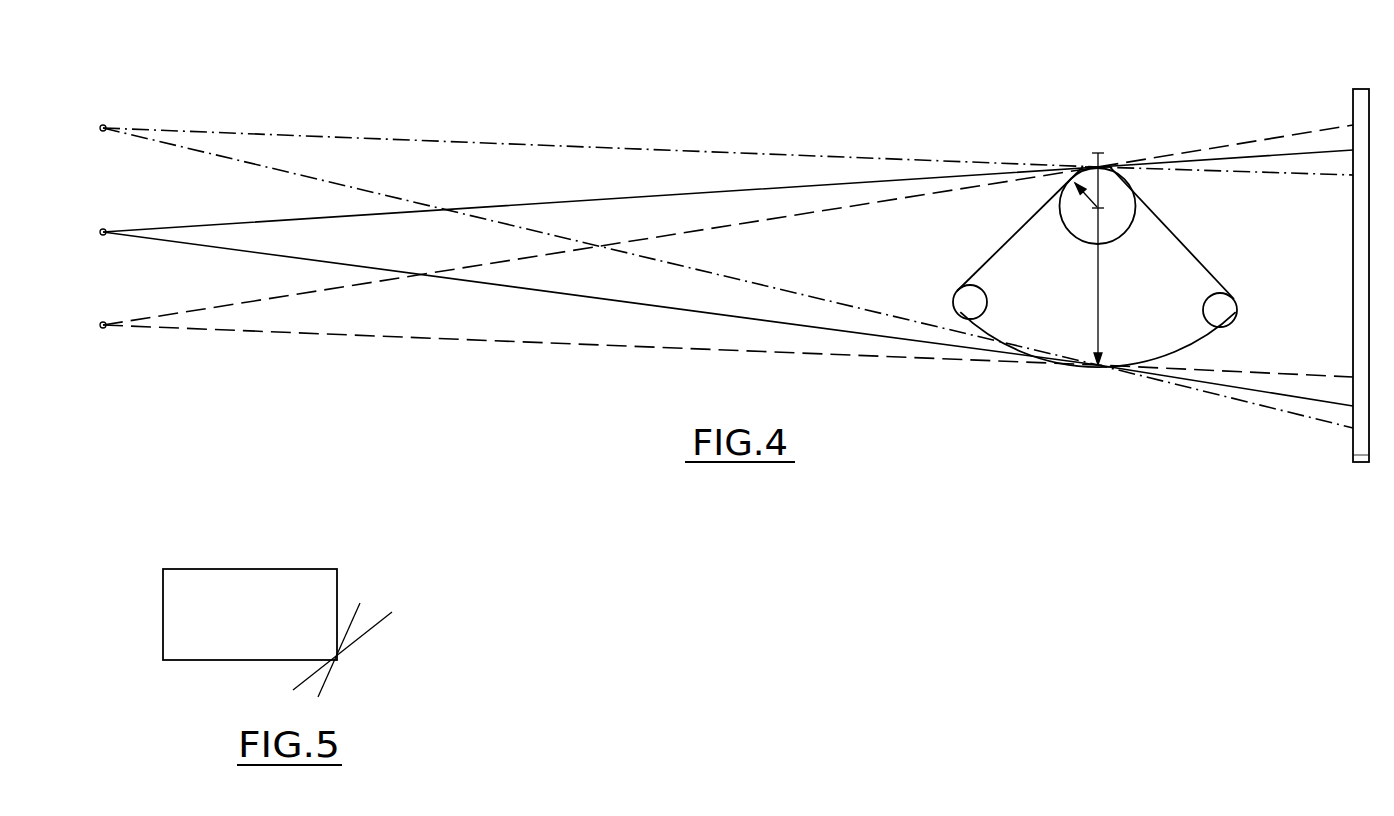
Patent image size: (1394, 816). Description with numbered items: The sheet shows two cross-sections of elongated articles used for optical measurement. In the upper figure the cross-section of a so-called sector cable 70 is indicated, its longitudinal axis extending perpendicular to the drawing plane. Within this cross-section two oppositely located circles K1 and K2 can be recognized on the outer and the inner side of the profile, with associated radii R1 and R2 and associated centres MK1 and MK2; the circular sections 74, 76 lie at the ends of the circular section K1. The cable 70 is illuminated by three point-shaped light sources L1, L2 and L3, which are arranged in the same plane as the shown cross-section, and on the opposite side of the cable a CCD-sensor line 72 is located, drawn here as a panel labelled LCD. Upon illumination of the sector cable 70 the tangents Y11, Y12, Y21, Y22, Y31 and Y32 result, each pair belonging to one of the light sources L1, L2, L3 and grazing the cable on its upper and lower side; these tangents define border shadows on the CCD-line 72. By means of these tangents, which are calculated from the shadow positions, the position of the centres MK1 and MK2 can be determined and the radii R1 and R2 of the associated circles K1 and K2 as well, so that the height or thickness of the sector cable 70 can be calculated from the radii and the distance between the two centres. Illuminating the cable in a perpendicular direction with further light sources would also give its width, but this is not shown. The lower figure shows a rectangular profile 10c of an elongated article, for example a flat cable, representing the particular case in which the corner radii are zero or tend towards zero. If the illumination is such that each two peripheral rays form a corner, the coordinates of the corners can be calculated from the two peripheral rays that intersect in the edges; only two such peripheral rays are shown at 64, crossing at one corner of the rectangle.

In FIG. 4, the point-shaped light source L1 is at (93, 213).
In FIG. 4, the point-shaped light source L2 is at (103, 106).
In FIG. 4, the point-shaped light source L3 is at (99, 346).
In FIG. 4, the tangent Y11 is at (652, 193).
In FIG. 4, the tangent Y12 is at (660, 307).
In FIG. 4, the tangent Y21 is at (763, 150).
In FIG. 4, the tangent Y22 is at (755, 287).
In FIG. 4, the tangent Y31 is at (867, 200).
In FIG. 4, the tangent Y32 is at (863, 357).
In FIG. 4, the liquid crystal display LCD is at (1362, 257).
In FIG. 4, the sector cable 70 is at (1218, 267).
In FIG. 4, the CCD-sensor line 72 is at (1360, 463).
In FIG. 4, the circular section 74 is at (954, 290).
In FIG. 4, the circular section 76 is at (1238, 310).
In FIG. 4, the circle K1 is at (1068, 232).
In FIG. 4, the circle K2 is at (1005, 343).
In FIG. 4, the radius R1 is at (1075, 183).
In FIG. 4, the radius R2 is at (1098, 319).
In FIG. 4, the centre MK1 is at (1103, 210).
In FIG. 4, the centre MK2 is at (1097, 165).
In FIG. 5, the light guide element 10c is at (248, 562).
In FIG. 5, the peripheral rays 64 is at (409, 594).